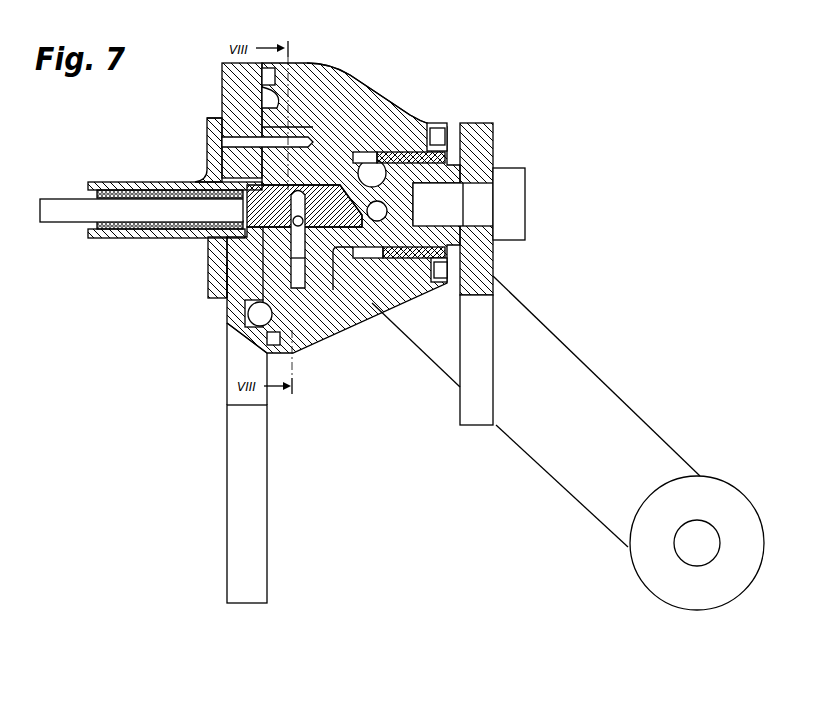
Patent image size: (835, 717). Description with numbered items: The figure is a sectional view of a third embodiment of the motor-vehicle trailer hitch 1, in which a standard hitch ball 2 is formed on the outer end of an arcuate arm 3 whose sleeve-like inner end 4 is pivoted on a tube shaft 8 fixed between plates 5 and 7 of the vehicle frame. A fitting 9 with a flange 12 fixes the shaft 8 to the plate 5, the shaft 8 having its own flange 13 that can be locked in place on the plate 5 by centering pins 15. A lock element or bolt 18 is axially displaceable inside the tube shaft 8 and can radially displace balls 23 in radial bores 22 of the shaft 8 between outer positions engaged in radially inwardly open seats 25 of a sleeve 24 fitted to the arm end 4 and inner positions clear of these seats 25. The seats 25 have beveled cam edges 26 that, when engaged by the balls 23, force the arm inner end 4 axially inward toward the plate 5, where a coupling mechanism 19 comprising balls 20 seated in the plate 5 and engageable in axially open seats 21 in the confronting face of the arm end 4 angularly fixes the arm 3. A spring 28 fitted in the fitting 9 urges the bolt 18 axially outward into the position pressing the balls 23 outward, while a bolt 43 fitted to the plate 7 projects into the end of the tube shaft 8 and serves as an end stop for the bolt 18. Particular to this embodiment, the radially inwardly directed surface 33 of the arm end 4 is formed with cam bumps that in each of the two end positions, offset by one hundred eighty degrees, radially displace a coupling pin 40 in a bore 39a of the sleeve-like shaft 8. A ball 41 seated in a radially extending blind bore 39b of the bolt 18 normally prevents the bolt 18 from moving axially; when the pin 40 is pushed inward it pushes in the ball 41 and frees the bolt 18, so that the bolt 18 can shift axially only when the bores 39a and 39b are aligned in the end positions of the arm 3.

The motor-vehicle trailer hitch 1 is at (128, 305).
The hitch ball 2 is at (717, 496).
The arcuate arm 3 is at (612, 409).
The sleeve-like inner end 4 is at (333, 96).
The plate 5 is at (241, 557).
The plate 7 is at (480, 412).
The tube shaft 8 is at (448, 166).
The fitting 9 is at (188, 183).
The flange 12 is at (213, 147).
The flange 13 is at (377, 96).
The centering pins 15 is at (221, 118).
The lock element or bolt 18 is at (350, 283).
The coupling mechanism 19 is at (234, 354).
The balls 20 is at (258, 313).
The axially open seats 21 is at (266, 100).
The radial bores 22 is at (392, 219).
The balls 23 is at (369, 160).
The sleeve 24 is at (421, 158).
The radially inwardly open seats 25 is at (440, 290).
The beveled cam edges 26 is at (368, 288).
The spring 28 is at (124, 238).
The radially inwardly directed surface 33 is at (293, 117).
The bore 39a is at (227, 283).
The radially extending blind bore 39b is at (292, 203).
The coupling pin 40 is at (301, 290).
The ball 41 is at (225, 253).
The bolt 43 is at (517, 193).